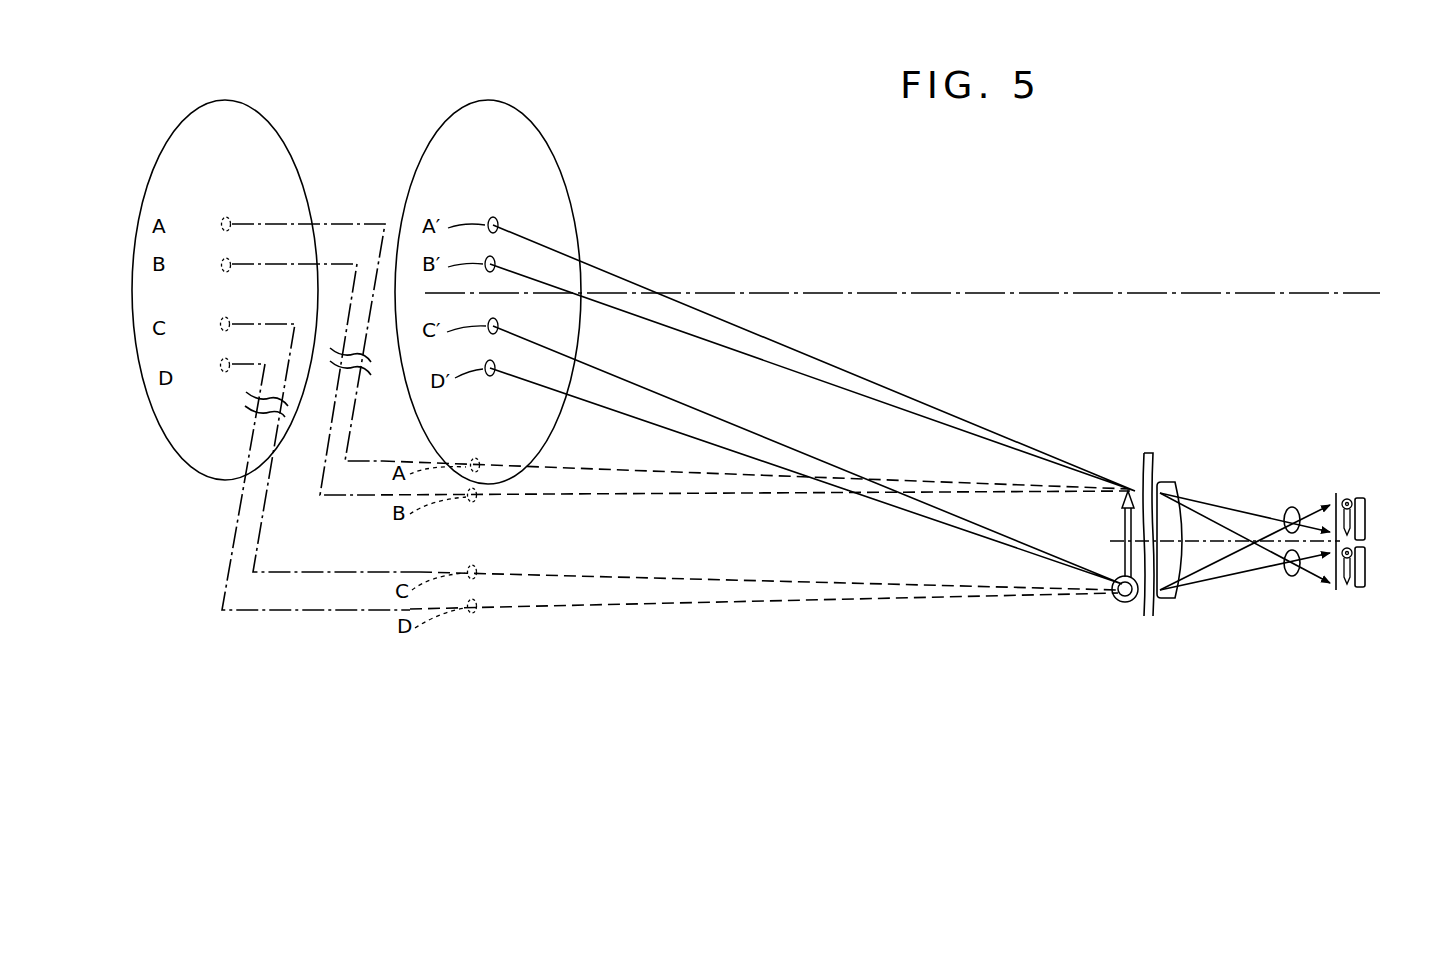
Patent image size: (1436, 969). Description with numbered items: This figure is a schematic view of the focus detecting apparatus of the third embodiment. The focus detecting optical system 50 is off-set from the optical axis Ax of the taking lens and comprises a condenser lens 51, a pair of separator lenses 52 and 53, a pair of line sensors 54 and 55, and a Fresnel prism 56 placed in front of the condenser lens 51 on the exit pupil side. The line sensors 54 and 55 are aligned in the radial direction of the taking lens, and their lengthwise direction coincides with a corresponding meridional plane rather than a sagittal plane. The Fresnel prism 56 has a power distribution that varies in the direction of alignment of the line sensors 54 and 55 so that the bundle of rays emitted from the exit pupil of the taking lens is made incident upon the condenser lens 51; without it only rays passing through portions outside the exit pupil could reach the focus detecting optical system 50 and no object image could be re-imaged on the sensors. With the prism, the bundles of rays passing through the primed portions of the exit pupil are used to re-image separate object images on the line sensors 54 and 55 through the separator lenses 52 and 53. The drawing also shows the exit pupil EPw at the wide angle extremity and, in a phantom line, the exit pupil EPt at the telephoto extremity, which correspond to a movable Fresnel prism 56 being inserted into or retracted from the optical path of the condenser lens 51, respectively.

The focus detecting optical system 50 is at (1200, 478).
The condenser lens 51 is at (1170, 599).
The separator lens 52 is at (1292, 506).
The separator lens 53 is at (1292, 577).
The line sensor 54 is at (1366, 514).
The line sensor 55 is at (1366, 564).
The Fresnel prism 56 is at (1148, 616).
The exit pupil at the telephoto extremity EPt is at (293, 176).
The exit pupil at the wide angle extremity EPw is at (568, 178).
The optical axis Ax is at (1168, 296).